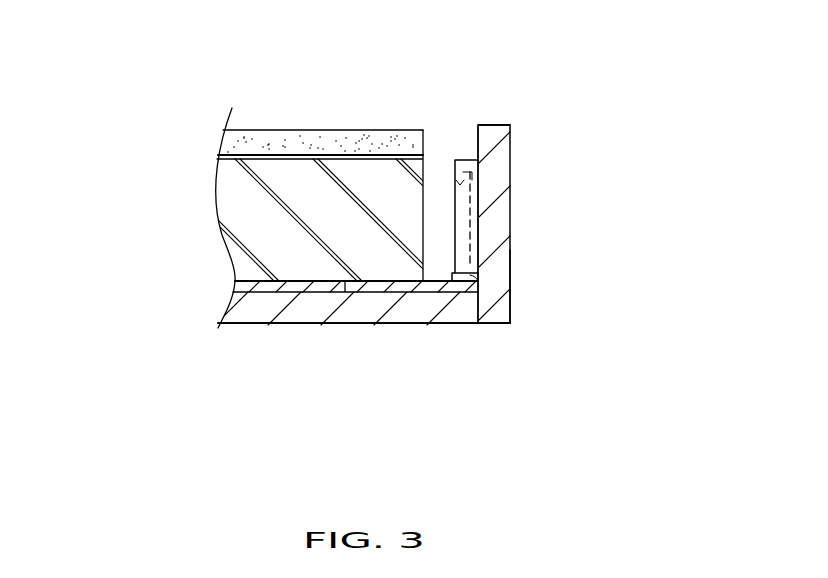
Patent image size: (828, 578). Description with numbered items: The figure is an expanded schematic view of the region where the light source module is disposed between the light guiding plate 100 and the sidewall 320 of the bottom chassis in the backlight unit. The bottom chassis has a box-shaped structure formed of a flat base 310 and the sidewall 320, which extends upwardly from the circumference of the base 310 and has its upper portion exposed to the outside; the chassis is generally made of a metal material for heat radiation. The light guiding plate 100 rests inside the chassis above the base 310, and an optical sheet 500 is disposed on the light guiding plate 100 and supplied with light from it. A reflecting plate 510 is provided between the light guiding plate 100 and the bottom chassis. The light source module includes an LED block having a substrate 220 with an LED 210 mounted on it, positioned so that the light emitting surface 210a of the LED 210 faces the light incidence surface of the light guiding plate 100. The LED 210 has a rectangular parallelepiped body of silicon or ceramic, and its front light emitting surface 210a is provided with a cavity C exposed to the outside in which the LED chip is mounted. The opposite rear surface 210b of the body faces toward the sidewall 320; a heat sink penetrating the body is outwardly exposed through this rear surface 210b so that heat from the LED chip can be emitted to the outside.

The light guiding plate 100 is at (243, 212).
The optical sheet 500 is at (280, 132).
The reflecting plate 510 is at (259, 283).
The substrate 220 is at (388, 285).
The base 310 is at (298, 315).
The sidewall 320 is at (502, 258).
The LED 210 is at (491, 185).
The light emitting surface 210a is at (454, 183).
The rear surface 210b is at (483, 190).
The cavity C is at (444, 162).